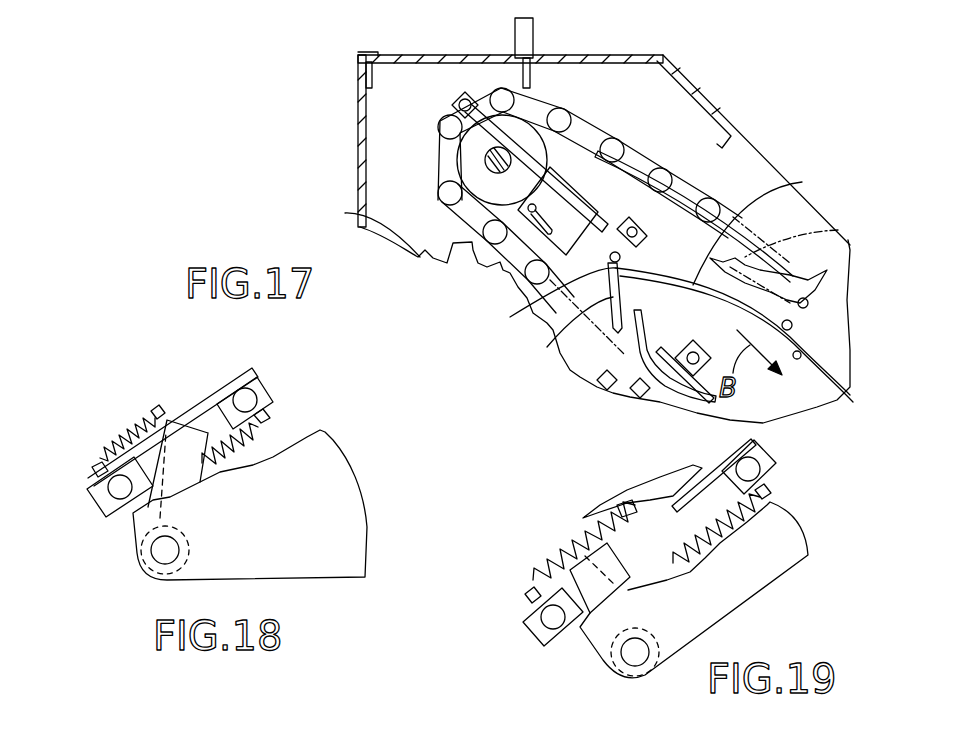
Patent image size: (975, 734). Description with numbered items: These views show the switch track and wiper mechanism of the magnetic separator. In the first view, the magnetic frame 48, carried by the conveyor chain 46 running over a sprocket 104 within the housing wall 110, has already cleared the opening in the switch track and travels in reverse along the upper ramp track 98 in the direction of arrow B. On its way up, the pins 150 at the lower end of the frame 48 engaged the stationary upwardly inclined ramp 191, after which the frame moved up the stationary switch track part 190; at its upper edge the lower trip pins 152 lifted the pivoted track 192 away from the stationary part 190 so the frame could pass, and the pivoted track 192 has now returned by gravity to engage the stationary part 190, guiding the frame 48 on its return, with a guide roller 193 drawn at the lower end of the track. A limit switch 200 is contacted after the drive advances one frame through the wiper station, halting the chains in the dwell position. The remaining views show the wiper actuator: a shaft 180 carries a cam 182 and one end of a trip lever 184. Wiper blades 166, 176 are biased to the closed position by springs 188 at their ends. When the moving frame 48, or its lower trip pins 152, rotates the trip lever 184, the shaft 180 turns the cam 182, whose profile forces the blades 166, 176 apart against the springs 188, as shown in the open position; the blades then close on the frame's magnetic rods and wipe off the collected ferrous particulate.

In FIG. 17, the limit switch 200 is at (515, 32).
In FIG. 17, the conveyor chain 46 is at (440, 127).
In FIG. 17, the magnetic frame 48 is at (517, 147).
In FIG. 17, the sprocket 104 is at (462, 160).
In FIG. 17, the housing 110 is at (575, 237).
In FIG. 17, the upper ramp track 98 is at (627, 157).
In FIG. 17, the pin 150 is at (637, 230).
In FIG. 17, the pivoted track 192 is at (802, 182).
In FIG. 17, the lower trip pin 152 is at (510, 317).
In FIG. 17, the stationary switch track part 190 is at (547, 347).
In FIG. 17, the stationary upwardly inclined ramp 191 is at (646, 323).
In FIG. 17, the roller 193 is at (797, 359).
In FIG. 18, the wiper blade 176 is at (253, 372).
In FIG. 19, the wiper blade 176 is at (727, 457).
In FIG. 18, the spring 188 is at (128, 427).
In FIG. 19, the spring 188 is at (610, 513).
In FIG. 18, the wiper blade 166 is at (90, 480).
In FIG. 19, the wiper blade 166 is at (527, 617).
In FIG. 18, the trip lever 184 is at (140, 480).
In FIG. 19, the trip lever 184 is at (588, 592).
In FIG. 18, the shaft 180 is at (173, 550).
In FIG. 19, the shaft 180 is at (643, 630).
In FIG. 18, the cam 182 is at (357, 537).
In FIG. 19, the cam 182 is at (767, 577).